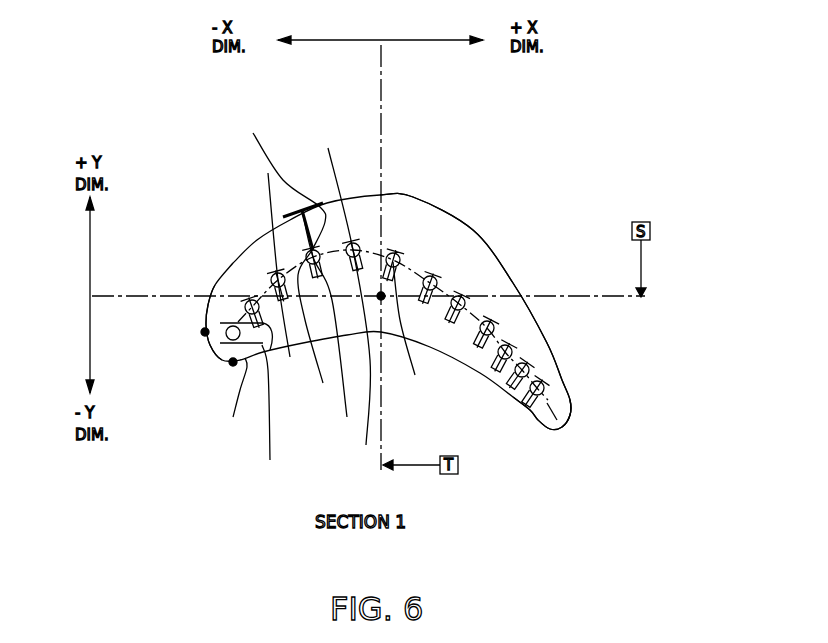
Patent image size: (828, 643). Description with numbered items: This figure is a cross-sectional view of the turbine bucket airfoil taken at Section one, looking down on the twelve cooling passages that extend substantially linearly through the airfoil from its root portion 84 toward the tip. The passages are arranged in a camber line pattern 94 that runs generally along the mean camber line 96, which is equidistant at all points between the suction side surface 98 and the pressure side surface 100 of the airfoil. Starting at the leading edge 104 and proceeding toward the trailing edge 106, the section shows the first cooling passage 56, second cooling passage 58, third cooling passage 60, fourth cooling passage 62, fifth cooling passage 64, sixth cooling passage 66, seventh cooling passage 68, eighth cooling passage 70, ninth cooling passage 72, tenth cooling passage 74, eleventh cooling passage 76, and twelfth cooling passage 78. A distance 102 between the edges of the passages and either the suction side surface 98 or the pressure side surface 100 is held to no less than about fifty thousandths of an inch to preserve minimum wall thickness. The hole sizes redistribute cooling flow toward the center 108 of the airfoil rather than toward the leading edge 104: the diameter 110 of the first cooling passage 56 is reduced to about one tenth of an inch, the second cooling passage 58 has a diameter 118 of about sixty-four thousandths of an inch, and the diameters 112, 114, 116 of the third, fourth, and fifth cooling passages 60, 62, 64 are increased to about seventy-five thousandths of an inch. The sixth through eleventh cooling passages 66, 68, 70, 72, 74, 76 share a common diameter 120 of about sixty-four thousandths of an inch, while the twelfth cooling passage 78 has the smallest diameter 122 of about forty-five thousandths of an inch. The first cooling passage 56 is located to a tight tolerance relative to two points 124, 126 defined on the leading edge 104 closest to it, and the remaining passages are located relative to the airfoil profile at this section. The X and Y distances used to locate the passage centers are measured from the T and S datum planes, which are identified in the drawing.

The first cooling passage 56 is at (228, 323).
The second cooling passage 58 is at (249, 300).
The third cooling passage 60 is at (274, 273).
The fourth cooling passage 62 is at (268, 173).
The fifth cooling passage 64 is at (328, 148).
The sixth cooling passage 66 is at (396, 250).
The seventh cooling passage 68 is at (433, 274).
The eighth cooling passage 70 is at (462, 294).
The ninth cooling passage 72 is at (491, 319).
The tenth cooling passage 74 is at (510, 343).
The eleventh cooling passage 76 is at (528, 362).
The twelfth cooling passage 78 is at (543, 380).
The root portion 84 is at (428, 127).
The camber line pattern 94 is at (500, 265).
The mean camber line 96 is at (547, 405).
The suction side surface 98 is at (472, 230).
The pressure side surface 100 is at (235, 402).
The distance 102 is at (278, 195).
The leading edge 104 is at (188, 398).
The trailing edge 106 is at (602, 412).
The center 108 is at (416, 331).
The diameter 110 is at (269, 418).
The diameter 112 is at (318, 343).
The diameter 114 is at (330, 325).
The diameter 116 is at (349, 310).
The diameter 118 is at (291, 279).
The diameter 120 is at (390, 250).
The diameter 122 is at (543, 422).
The point 124 is at (205, 332).
The point 126 is at (233, 362).